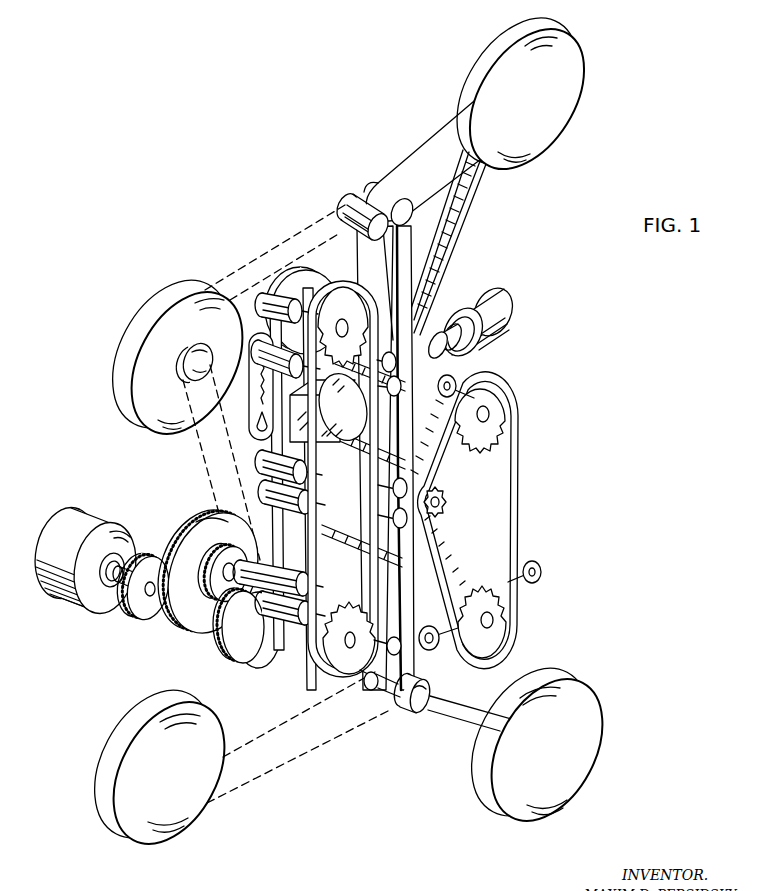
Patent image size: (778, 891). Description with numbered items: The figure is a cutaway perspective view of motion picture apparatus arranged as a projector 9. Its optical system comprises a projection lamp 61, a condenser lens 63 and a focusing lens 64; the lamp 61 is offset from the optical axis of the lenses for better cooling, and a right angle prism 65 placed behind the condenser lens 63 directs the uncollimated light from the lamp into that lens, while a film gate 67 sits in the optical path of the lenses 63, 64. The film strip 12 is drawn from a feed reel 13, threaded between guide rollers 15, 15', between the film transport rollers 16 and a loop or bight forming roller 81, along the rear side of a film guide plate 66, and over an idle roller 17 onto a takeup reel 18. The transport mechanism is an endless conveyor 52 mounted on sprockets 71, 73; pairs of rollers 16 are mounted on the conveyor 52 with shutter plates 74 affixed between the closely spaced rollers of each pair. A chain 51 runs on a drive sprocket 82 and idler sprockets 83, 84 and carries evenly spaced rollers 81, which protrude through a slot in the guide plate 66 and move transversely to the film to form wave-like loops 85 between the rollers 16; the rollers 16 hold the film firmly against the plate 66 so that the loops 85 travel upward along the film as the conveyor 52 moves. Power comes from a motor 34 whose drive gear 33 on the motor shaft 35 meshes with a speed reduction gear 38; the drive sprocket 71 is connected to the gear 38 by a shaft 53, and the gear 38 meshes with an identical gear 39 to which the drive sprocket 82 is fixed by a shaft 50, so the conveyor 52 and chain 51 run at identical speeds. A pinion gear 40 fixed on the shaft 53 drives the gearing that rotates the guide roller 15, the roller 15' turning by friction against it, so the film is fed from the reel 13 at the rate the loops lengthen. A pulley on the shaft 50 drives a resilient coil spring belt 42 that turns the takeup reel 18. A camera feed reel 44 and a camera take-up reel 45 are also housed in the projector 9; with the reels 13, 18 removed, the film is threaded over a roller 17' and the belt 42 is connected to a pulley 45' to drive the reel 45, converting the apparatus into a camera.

The projector 9 is at (193, 137).
The film strip 12 is at (404, 165).
The feed reel 13 is at (590, 705).
The film guide roller 15 is at (406, 699).
The film guide roller 15' is at (440, 685).
The film transport rollers 16 is at (389, 638).
The idle roller 17 is at (355, 177).
The roller 17' is at (346, 214).
The takeup reel 18 is at (566, 98).
The drive gear 33 is at (149, 562).
The motor 34 is at (60, 530).
The motor shaft 35 is at (116, 590).
The speed reduction gear 38 is at (195, 515).
The gear 39 is at (228, 548).
The pinion gear 40 is at (208, 570).
The belt 42 is at (467, 228).
The camera feed reel 44 is at (130, 838).
The camera take-up reel 45 is at (177, 353).
The pulley 45' is at (194, 353).
The shaft 50 is at (452, 597).
The chain 51 is at (519, 424).
The endless conveyor 52 is at (272, 666).
The shaft 53 is at (225, 585).
The projection lamp 61 is at (255, 397).
The condenser lens 63 is at (366, 432).
The focusing lens 64 is at (513, 323).
The right angle prism 65 is at (322, 411).
The film guide plate 66 is at (411, 398).
The film gate 67 is at (401, 387).
The drive sprocket 71 is at (220, 648).
The sprocket 73 is at (356, 306).
The shutter plates 74 is at (374, 551).
The loop forming rollers 81 is at (537, 563).
The drive sprocket 82 is at (505, 617).
The idler sprocket 83 is at (492, 409).
The idler sprocket 84 is at (448, 502).
The film loops 85 is at (408, 371).